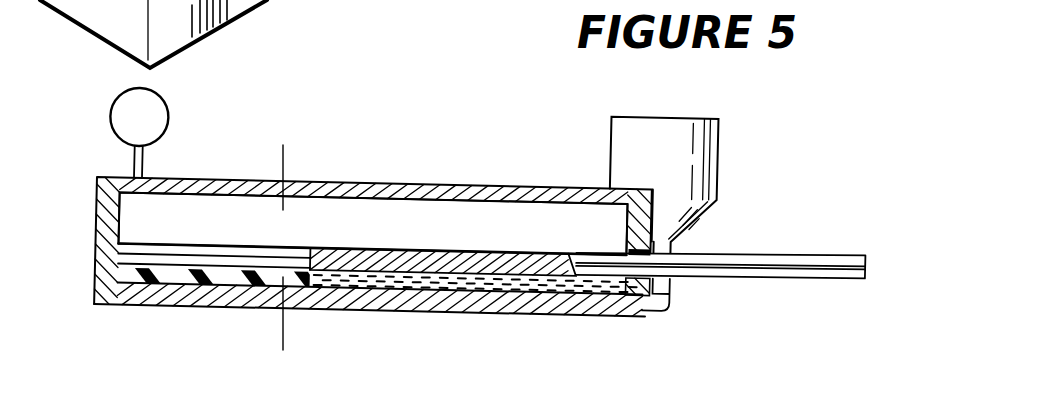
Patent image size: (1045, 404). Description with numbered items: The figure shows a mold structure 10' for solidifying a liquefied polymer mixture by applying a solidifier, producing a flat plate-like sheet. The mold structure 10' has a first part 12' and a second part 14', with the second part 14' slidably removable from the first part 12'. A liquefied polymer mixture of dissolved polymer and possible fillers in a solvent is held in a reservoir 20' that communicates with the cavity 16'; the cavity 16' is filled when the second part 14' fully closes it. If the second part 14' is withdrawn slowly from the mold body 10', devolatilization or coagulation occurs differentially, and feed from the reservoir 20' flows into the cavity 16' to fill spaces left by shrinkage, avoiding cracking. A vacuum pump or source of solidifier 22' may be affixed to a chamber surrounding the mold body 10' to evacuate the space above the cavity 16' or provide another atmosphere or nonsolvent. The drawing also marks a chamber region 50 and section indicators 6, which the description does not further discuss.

The mold structure 10' is at (367, 288).
The first part 12' is at (369, 329).
The second part 14' is at (491, 234).
The cavity 16' is at (386, 321).
The reservoir 20' is at (713, 184).
The vacuum pump or source of solidifier 22' is at (184, 130).
The chamber 50 is at (203, 208).
The section line 6- 6 is at (300, 338).